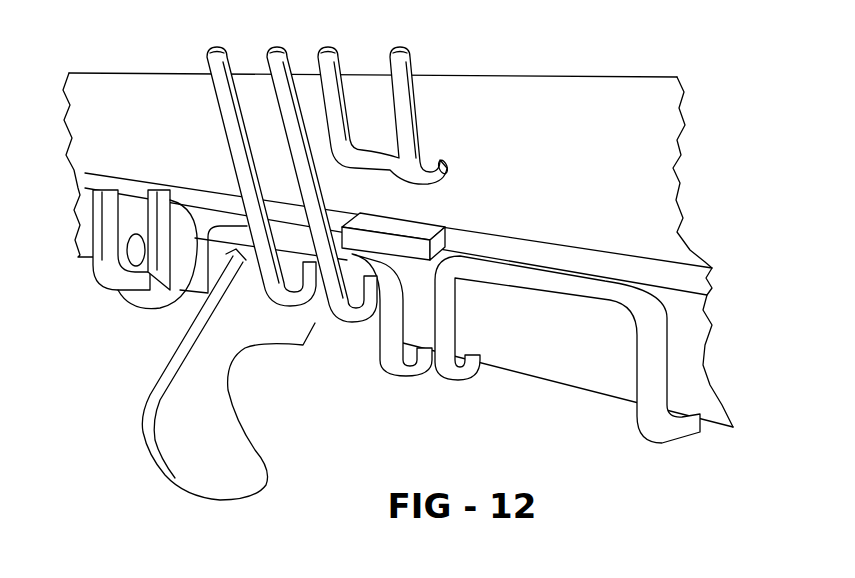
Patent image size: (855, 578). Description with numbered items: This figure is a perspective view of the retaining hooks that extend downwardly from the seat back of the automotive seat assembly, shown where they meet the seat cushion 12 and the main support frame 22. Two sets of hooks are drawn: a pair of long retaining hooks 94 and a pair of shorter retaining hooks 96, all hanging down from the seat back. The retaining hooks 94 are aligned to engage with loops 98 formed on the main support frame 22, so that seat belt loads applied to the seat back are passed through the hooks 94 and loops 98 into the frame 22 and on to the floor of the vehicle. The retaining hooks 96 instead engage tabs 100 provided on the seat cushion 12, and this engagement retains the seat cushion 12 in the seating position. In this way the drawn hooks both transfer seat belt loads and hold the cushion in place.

The seat cushion 12 is at (672, 168).
The main support frame 22 is at (547, 368).
The retaining hooks 94 is at (240, 145).
The retaining hooks 96 is at (412, 108).
The loops 98 is at (385, 363).
The tabs 100 is at (420, 232).